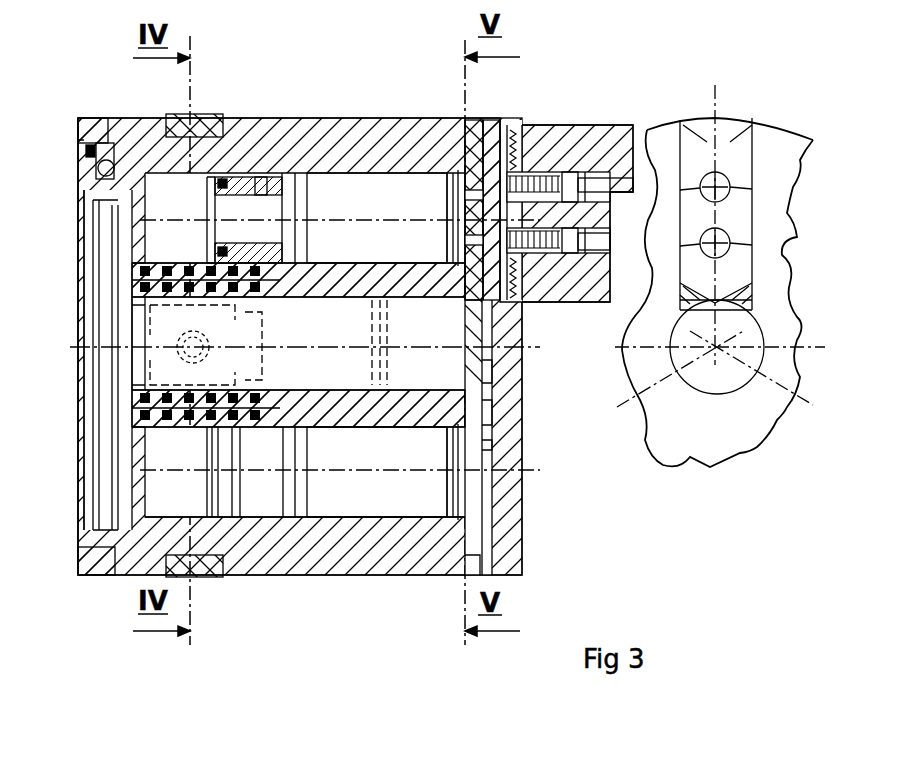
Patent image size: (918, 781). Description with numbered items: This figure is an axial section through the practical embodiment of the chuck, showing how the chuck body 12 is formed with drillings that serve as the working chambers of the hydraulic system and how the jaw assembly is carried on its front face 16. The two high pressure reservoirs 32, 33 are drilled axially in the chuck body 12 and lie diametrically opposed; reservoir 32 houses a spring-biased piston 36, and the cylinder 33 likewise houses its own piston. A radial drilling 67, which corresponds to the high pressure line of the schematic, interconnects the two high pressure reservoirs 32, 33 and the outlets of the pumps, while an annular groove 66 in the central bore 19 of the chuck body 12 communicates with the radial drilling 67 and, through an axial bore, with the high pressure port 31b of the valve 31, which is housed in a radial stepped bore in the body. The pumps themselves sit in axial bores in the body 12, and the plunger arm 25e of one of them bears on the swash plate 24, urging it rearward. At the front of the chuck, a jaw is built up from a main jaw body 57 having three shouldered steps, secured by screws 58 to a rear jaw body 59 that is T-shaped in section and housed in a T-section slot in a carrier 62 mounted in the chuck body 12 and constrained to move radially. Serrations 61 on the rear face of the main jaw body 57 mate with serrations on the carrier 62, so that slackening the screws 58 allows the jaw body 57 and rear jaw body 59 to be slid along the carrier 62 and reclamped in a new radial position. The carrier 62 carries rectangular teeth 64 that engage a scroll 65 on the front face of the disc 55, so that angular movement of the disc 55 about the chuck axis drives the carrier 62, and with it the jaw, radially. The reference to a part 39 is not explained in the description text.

The chuck body 12 is at (262, 576).
The front face 16 is at (523, 531).
The central bore 19 is at (395, 440).
The swash plate 24 is at (118, 505).
The plunger arm 25e is at (104, 155).
The valve 31 is at (190, 347).
The high pressure port 31b is at (185, 348).
The high pressure reservoir 32 is at (356, 185).
The high pressure reservoir 33 is at (372, 510).
The piston 36 is at (296, 252).
The lower piston 39 is at (260, 488).
The disc 55 is at (486, 413).
The main jaw body 57 is at (700, 140).
The screws 58 is at (576, 245).
The rear jaw body 59 is at (560, 130).
The serrations 61 is at (542, 292).
The carrier 62 is at (488, 138).
The rectangular teeth 64 is at (488, 262).
The scroll 65 is at (490, 373).
The annular groove 66 is at (258, 197).
The radial drilling 67 is at (172, 262).